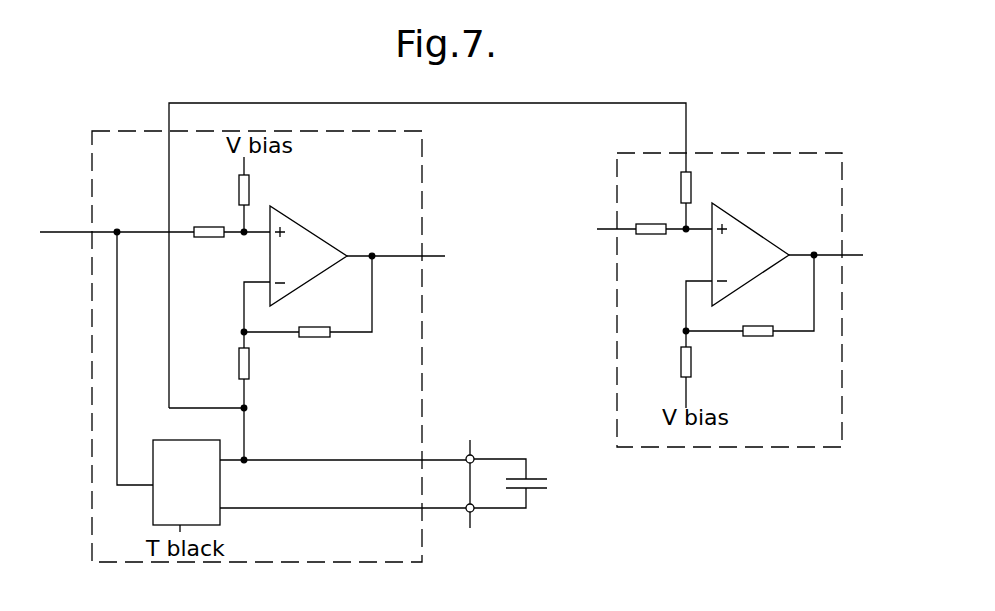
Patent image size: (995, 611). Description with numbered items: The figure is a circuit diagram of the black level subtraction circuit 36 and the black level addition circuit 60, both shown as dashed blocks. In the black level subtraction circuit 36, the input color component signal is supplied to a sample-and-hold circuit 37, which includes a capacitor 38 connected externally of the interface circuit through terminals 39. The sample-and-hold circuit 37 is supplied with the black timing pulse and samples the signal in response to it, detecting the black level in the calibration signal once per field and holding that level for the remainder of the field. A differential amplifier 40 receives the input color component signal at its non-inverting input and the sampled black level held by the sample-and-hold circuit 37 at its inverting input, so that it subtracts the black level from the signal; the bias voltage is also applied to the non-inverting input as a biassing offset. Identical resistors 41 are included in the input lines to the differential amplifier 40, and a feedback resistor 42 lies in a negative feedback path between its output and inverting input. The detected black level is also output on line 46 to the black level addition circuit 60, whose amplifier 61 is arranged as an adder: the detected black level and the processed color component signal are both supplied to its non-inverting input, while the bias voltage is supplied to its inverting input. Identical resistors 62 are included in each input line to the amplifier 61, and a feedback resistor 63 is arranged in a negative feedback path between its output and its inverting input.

The black level subtraction circuit 36 is at (422, 318).
The sample-and-hold circuit 37 is at (222, 483).
The capacitor 38 is at (536, 490).
The terminals 39 is at (474, 455).
The differential amplifier 40 is at (305, 224).
The resistors 41 is at (208, 242).
The feedback resistor 42 is at (315, 339).
The line 46 is at (470, 103).
The black level addition circuit 60 is at (617, 328).
The amplifier 61 is at (757, 230).
The resistors 62 is at (680, 190).
The feedback resistor 63 is at (760, 338).